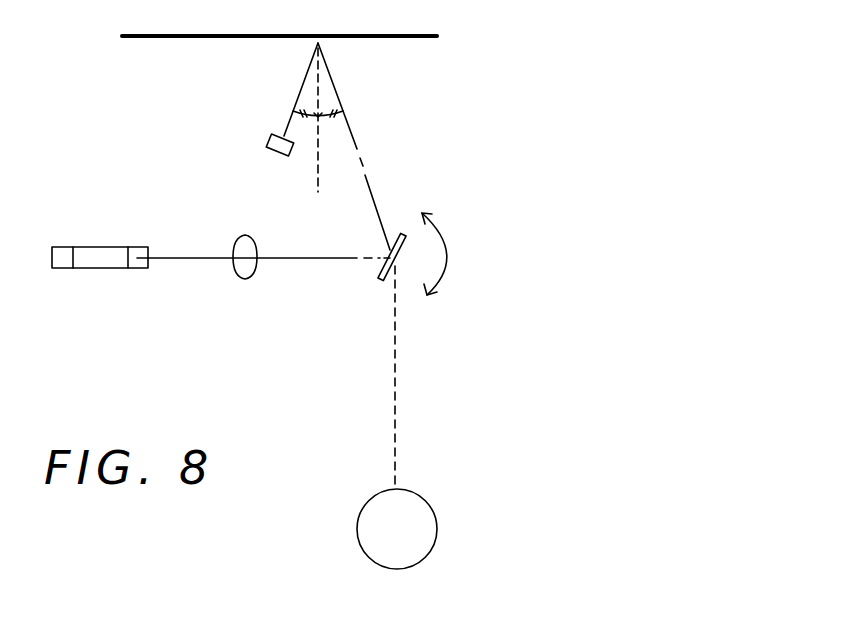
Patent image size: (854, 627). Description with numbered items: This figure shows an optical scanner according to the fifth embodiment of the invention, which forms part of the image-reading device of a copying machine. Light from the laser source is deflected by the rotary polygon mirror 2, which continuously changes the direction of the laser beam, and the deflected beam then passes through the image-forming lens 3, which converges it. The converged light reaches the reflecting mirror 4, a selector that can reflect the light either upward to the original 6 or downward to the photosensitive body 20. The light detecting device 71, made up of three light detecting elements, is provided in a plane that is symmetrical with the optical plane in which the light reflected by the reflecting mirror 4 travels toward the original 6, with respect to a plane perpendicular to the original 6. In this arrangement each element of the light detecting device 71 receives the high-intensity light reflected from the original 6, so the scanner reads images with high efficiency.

The rotary polygon mirror 2 is at (66, 246).
The image-forming lens 3 is at (241, 280).
The reflecting mirror 4 is at (383, 283).
The original 6 is at (437, 36).
The photosensitive body 20 is at (437, 516).
The light detecting device 71 is at (267, 141).